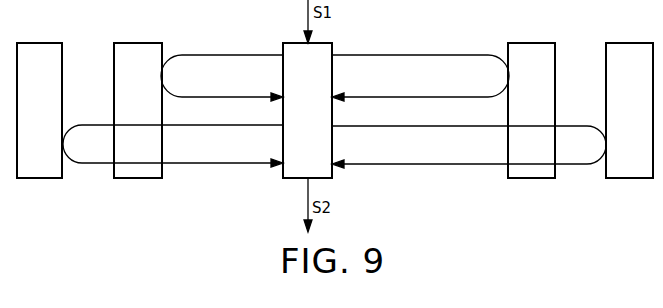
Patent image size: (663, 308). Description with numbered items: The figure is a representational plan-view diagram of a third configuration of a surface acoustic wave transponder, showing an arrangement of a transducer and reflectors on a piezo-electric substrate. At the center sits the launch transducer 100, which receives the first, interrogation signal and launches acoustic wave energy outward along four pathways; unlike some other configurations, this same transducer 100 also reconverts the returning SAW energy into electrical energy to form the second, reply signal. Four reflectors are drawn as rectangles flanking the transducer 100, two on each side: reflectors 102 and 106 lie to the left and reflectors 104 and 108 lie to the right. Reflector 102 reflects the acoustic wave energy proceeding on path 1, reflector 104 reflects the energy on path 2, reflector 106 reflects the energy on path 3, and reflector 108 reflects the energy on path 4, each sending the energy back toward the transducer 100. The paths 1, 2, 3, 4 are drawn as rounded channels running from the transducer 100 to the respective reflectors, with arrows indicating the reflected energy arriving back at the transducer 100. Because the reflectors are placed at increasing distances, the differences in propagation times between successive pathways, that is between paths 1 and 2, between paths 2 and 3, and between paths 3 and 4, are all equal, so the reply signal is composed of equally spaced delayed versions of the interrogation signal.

The launch transducer 100 is at (293, 47).
The reflector 102 is at (151, 52).
The reflector 104 is at (545, 51).
The reflector 106 is at (50, 52).
The reflector 108 is at (645, 55).
The path 1 is at (227, 57).
The path 2 is at (412, 57).
The path 3 is at (227, 127).
The path 4 is at (413, 128).